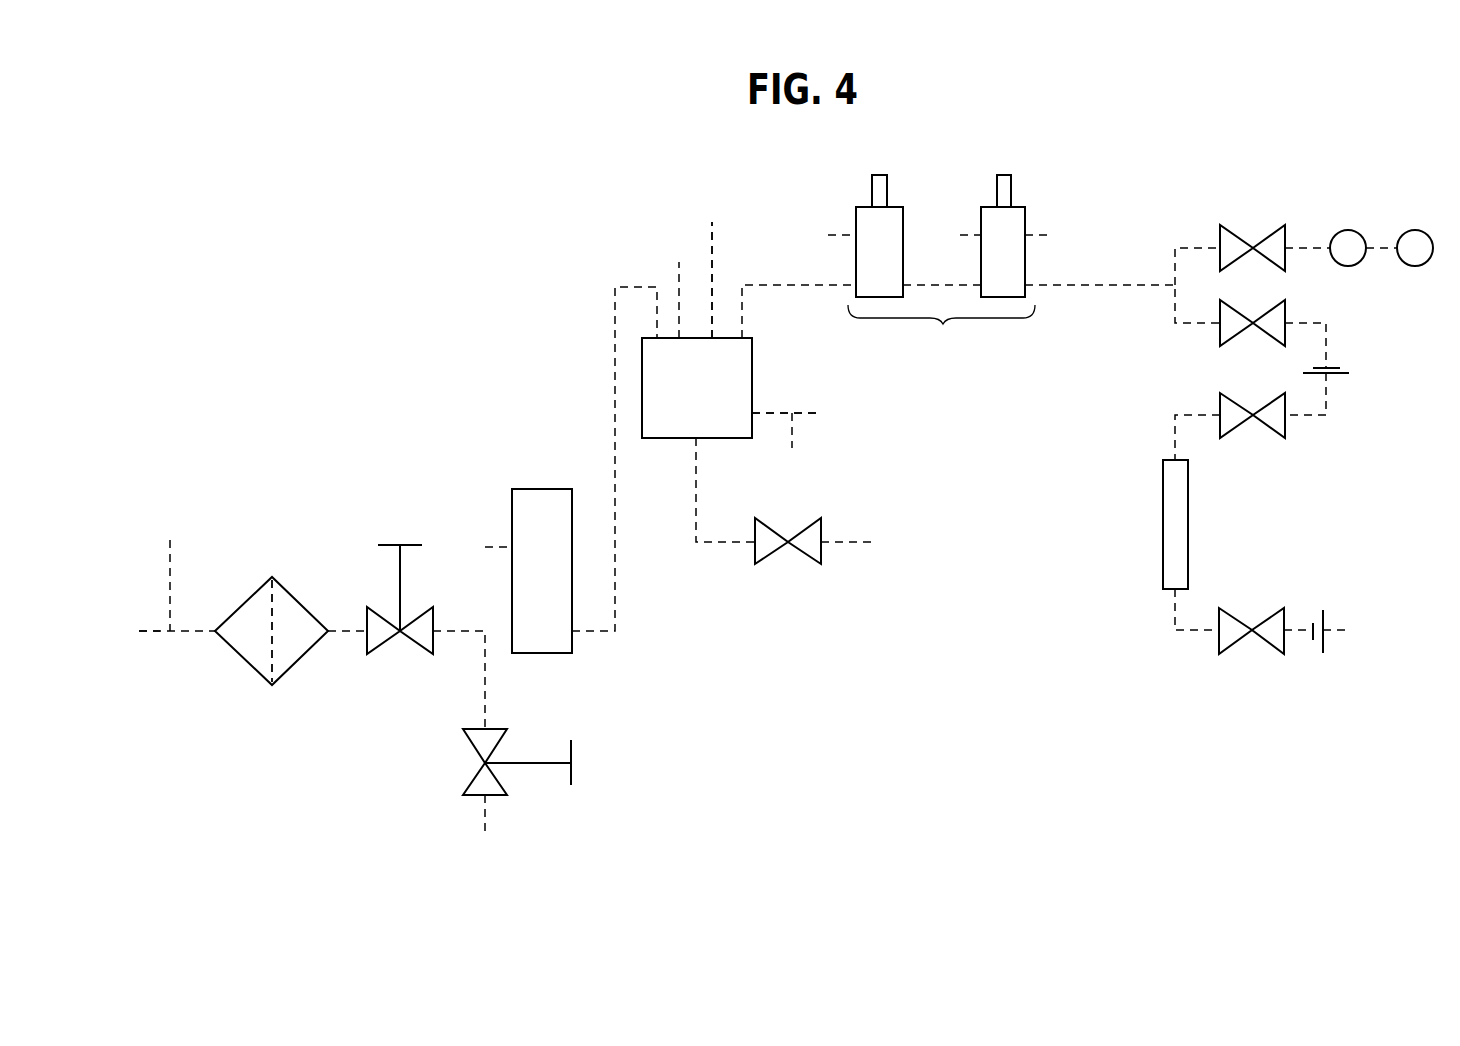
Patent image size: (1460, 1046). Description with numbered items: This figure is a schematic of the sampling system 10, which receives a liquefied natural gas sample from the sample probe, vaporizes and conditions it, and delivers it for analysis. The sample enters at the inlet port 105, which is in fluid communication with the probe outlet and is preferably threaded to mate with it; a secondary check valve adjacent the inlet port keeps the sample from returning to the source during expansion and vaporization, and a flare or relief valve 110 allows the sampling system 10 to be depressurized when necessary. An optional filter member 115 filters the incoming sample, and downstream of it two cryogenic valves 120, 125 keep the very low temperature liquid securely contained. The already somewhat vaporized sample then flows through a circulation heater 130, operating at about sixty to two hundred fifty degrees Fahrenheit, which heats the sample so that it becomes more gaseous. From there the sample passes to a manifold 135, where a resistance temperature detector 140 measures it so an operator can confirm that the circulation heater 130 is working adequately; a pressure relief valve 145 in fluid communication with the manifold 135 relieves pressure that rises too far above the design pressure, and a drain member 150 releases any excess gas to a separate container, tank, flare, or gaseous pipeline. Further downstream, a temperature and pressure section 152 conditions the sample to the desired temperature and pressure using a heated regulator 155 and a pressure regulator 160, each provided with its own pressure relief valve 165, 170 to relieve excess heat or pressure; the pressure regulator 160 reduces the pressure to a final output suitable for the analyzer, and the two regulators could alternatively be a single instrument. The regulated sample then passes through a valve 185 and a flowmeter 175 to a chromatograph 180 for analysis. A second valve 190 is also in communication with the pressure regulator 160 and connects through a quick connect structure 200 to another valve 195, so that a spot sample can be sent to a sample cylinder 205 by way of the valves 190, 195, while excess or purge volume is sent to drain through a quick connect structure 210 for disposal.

The sampling system 10 is at (381, 235).
The inlet port 105 is at (134, 627).
The flare or relief valve 110 is at (188, 580).
The filter member 115 is at (260, 583).
The cryogenic valve 120 is at (388, 648).
The cryogenic valve 125 is at (497, 797).
The circulation heater 130 is at (535, 489).
The manifold 135 is at (650, 440).
The resistance temperature detector (RTD) 140 is at (713, 269).
The pressure relief valve 145 is at (804, 414).
The drain member 150 is at (829, 541).
The temperature and pressure section 152 is at (941, 327).
The heated regulator 155 is at (853, 252).
The pressure regulator 160 is at (981, 252).
The pressure relief valve 165 is at (887, 189).
The pressure relief valve 170 is at (1011, 189).
The flowmeter 175 is at (1353, 230).
The chromatograph 180 is at (1420, 230).
The valve 185 is at (1271, 230).
The valve 190 is at (1271, 310).
The valve 195 is at (1272, 430).
The quick connect structure 200 is at (1340, 378).
The sample cylinder 205 is at (1190, 525).
The quick connect structure 210 is at (1294, 631).